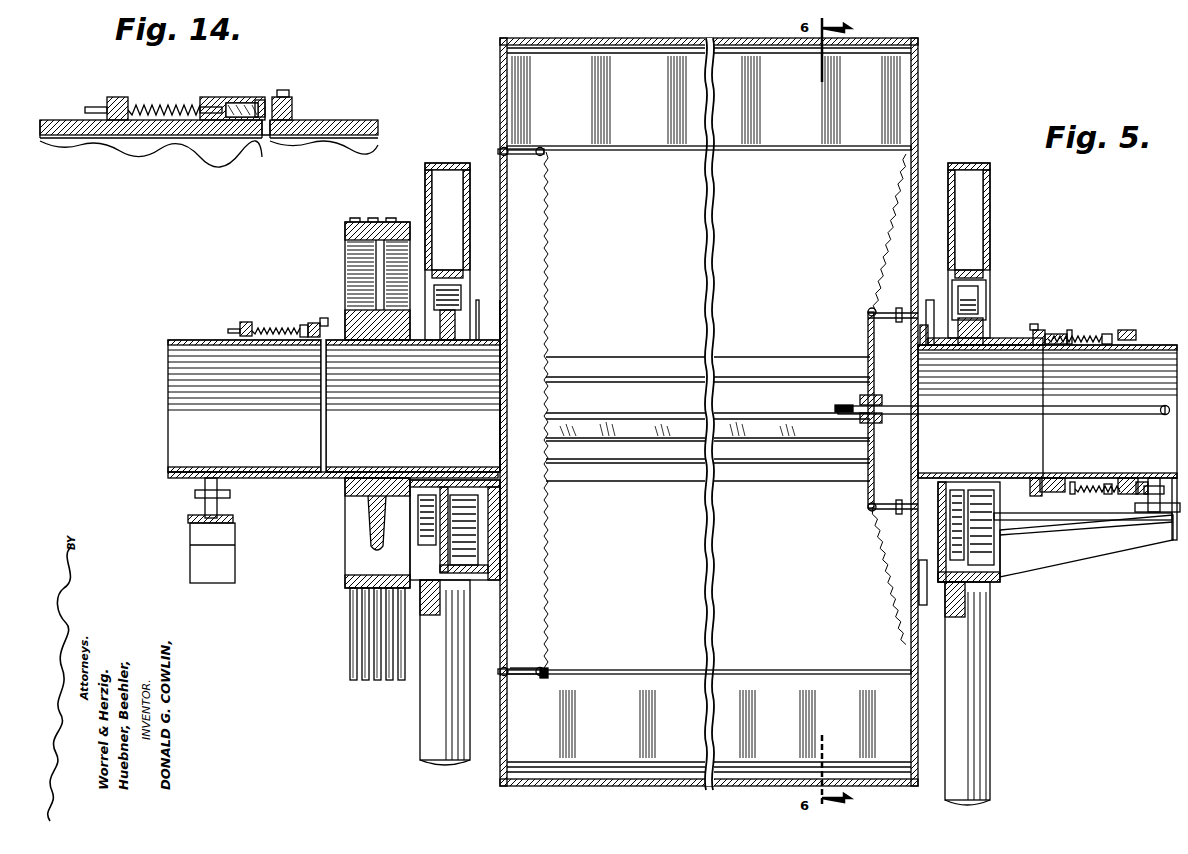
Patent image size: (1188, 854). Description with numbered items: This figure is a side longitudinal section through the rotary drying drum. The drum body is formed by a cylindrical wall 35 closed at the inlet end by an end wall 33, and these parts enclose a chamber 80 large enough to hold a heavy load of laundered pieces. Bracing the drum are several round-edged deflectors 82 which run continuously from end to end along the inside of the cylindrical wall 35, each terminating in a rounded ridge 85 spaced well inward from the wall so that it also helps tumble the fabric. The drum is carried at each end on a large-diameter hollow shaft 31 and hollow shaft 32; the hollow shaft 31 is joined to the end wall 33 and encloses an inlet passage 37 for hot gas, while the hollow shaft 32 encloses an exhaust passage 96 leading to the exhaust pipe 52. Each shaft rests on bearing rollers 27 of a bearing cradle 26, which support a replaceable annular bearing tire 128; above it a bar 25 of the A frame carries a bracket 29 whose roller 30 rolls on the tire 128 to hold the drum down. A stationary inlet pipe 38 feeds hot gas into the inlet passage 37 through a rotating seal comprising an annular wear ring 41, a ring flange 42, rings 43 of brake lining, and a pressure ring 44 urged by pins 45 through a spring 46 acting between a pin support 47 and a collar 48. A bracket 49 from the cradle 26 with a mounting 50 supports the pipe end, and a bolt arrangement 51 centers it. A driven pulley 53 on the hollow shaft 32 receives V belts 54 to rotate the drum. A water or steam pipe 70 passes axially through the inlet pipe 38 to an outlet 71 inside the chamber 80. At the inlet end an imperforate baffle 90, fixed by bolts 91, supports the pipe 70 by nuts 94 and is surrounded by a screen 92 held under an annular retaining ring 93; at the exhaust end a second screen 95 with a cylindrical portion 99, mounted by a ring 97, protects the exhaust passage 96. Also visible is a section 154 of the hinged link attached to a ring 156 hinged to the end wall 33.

In FIG. 5, the bar 25 is at (983, 264).
In FIG. 5, the bearing cradle 26 is at (1012, 562).
In FIG. 5, the bearing rollers 27 is at (1048, 542).
In FIG. 5, the bracket 29 is at (988, 304).
In FIG. 5, the roller 30 is at (979, 286).
In FIG. 5, the hollow shaft 31 is at (988, 343).
In FIG. 14, the hollow shaft 32 is at (334, 120).
In FIG. 5, the hollow shaft 32 is at (477, 340).
In FIG. 5, the end wall 33 is at (916, 170).
In FIG. 5, the cylindrical wall 35 is at (908, 42).
In FIG. 5, the inlet passage 37 is at (979, 449).
In FIG. 5, the inlet pipe 38 is at (1164, 345).
In FIG. 14, the annular wear ring 41 is at (296, 100).
In FIG. 5, the annular wear ring 41 is at (1032, 486).
In FIG. 14, the ring flange 42 is at (230, 97).
In FIG. 5, the ring flange 42 is at (1060, 334).
In FIG. 14, the rings 43 is at (258, 100).
In FIG. 5, the rings 43 is at (312, 330).
In FIG. 14, the pressure ring 44 is at (117, 97).
In FIG. 5, the pressure ring 44 is at (243, 330).
In FIG. 14, the pins 45 is at (146, 108).
In FIG. 5, the pins 45 is at (260, 330).
In FIG. 14, the spring 46 is at (183, 108).
In FIG. 5, the spring 46 is at (286, 330).
In FIG. 5, the pin support 47 is at (1141, 482).
In FIG. 5, the collar 48 is at (1072, 332).
In FIG. 5, the bracket 49 is at (1112, 554).
In FIG. 5, the mounting 50 is at (1164, 500).
In FIG. 5, the bolt arrangement 51 is at (1148, 500).
In FIG. 14, the exhaust pipe 52 is at (51, 120).
In FIG. 5, the exhaust pipe 52 is at (188, 340).
In FIG. 5, the driven pulley 53 is at (346, 236).
In FIG. 5, the V belts 54 is at (352, 668).
In FIG. 5, the water or steam pipe 70 is at (1137, 414).
In FIG. 5, the outlet 71 is at (840, 412).
In FIG. 5, the chamber 80 is at (759, 265).
In FIG. 5, the deflectors 82 is at (830, 153).
In FIG. 5, the rounded ridge 85 is at (620, 150).
In FIG. 5, the imperforate baffle 90 is at (523, 666).
In FIG. 5, the bolts 91 is at (886, 316).
In FIG. 5, the screen 92 is at (884, 257).
In FIG. 5, the annular retaining ring 93 is at (898, 152).
In FIG. 5, the nuts 94 is at (866, 424).
In FIG. 5, the second screen 95 is at (548, 276).
In FIG. 5, the exhaust passage 96 is at (500, 450).
In FIG. 5, the ring 97 is at (545, 676).
In FIG. 5, the cylindrical portion 99 is at (532, 674).
In FIG. 5, the annular bearing tire 128 is at (979, 330).
In FIG. 5, the section 154 is at (928, 566).
In FIG. 5, the ring 156 is at (936, 302).